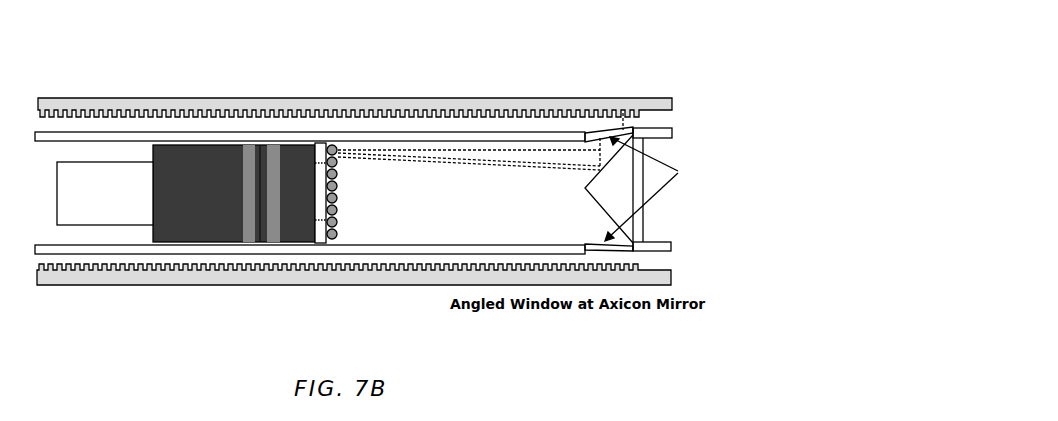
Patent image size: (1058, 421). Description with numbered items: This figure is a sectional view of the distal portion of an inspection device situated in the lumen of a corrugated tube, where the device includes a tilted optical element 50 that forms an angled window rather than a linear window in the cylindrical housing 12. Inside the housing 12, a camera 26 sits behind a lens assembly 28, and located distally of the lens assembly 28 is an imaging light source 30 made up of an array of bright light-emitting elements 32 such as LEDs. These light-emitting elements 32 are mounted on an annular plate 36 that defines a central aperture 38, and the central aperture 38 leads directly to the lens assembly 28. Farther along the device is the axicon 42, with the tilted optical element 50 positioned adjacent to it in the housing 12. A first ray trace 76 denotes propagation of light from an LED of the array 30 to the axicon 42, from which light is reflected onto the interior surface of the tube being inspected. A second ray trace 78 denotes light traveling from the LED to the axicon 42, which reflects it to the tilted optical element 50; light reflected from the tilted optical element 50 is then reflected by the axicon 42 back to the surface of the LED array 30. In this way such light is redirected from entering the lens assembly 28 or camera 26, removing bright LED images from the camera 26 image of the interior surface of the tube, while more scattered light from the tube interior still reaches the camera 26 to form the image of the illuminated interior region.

The cylindrical housing 12 is at (386, 132).
The camera 26 is at (105, 193).
The lens assembly 28 is at (215, 145).
The imaging light source 30 is at (331, 143).
The light-emitting elements 32 is at (341, 162).
The annular plate 36 is at (318, 243).
The central aperture 38 is at (340, 190).
The axicon 42 is at (619, 195).
The tilted optical element 50 is at (607, 134).
The first ray trace 76 is at (522, 150).
The second ray trace 78 is at (497, 173).